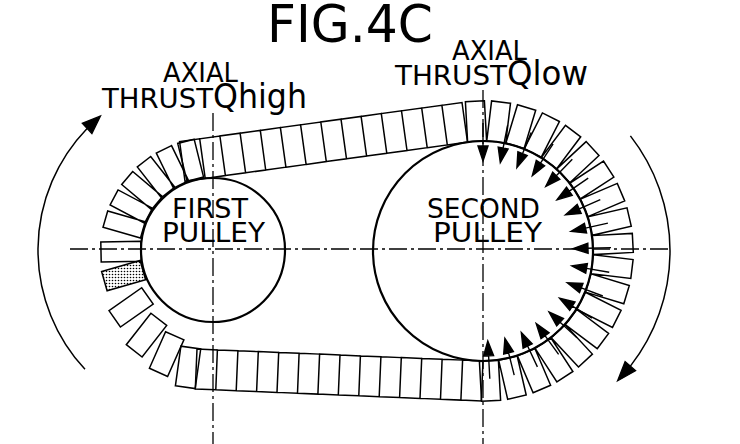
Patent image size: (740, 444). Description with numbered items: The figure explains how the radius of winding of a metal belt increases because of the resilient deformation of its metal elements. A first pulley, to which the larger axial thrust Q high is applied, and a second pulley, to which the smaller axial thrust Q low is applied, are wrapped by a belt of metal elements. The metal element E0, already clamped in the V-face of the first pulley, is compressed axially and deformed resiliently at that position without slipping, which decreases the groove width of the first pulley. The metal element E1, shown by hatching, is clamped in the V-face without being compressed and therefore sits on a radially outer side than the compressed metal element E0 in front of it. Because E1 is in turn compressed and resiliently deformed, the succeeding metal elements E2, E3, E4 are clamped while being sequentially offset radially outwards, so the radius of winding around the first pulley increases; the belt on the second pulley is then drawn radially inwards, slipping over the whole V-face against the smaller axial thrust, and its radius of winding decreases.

The metal element E0 is at (100, 243).
The metal element E1 is at (106, 290).
The metal element E2 is at (120, 319).
The metal element E3 is at (134, 352).
The metal element E4 is at (159, 374).